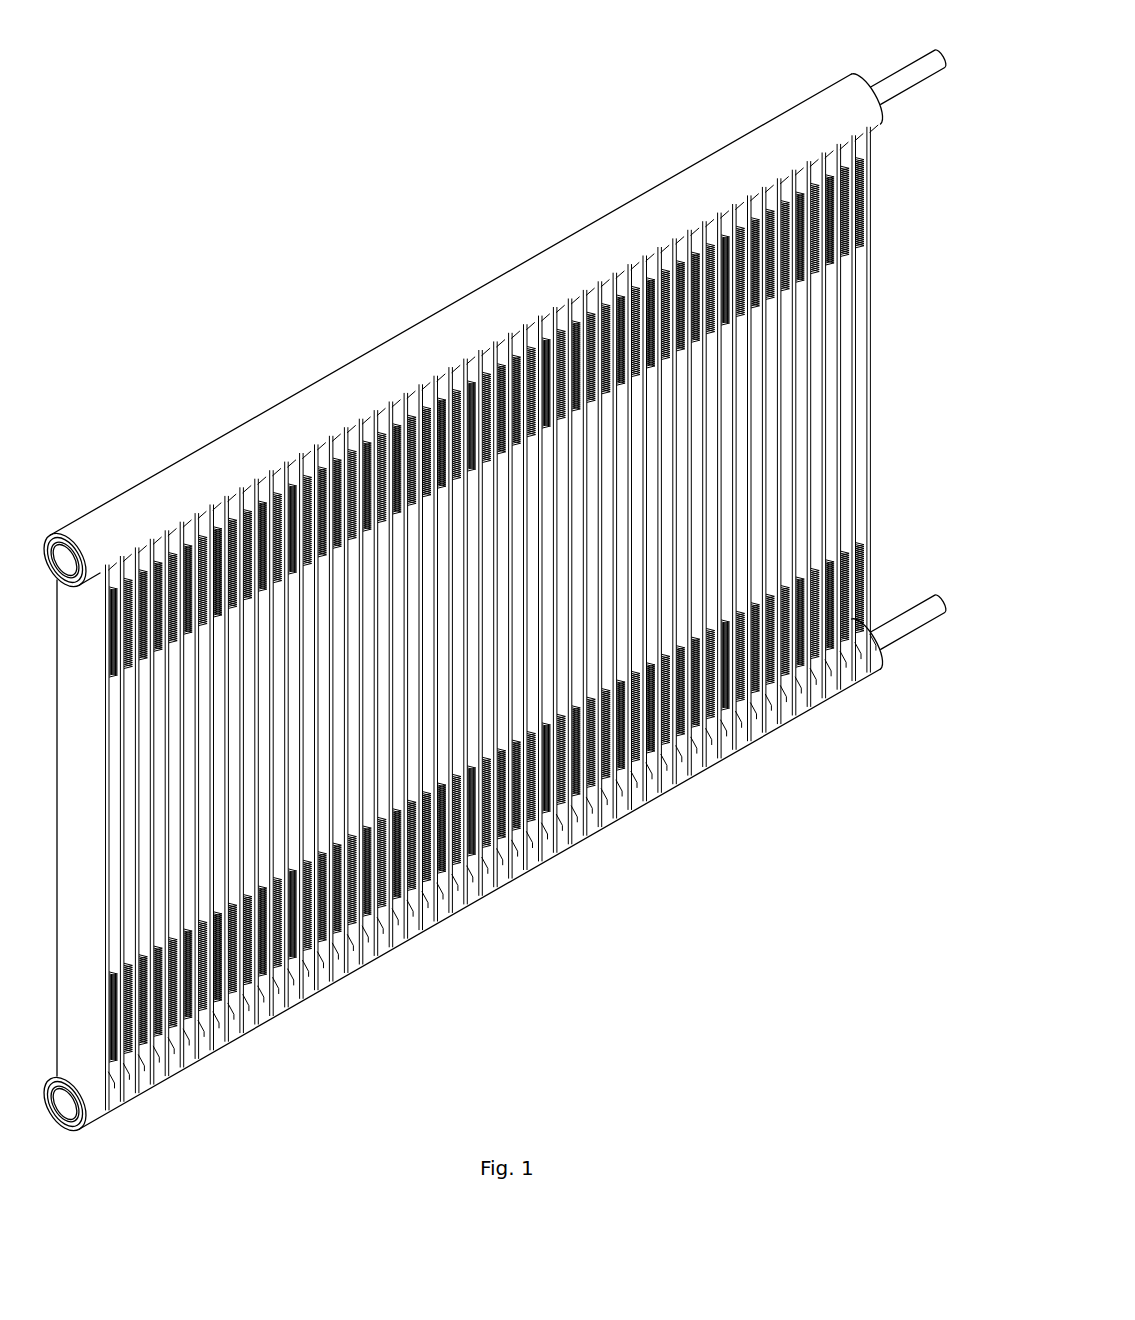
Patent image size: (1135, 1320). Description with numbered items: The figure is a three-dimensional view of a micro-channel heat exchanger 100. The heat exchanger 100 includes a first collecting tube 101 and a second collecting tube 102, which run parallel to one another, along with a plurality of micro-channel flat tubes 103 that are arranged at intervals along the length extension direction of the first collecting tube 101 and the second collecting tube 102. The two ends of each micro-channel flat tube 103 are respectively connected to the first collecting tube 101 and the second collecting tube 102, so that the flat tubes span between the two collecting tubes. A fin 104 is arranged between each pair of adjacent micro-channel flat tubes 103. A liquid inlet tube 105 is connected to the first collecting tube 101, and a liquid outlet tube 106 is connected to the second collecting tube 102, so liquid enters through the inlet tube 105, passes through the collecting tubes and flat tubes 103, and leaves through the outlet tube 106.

The micro-channel heat exchanger 100 is at (497, 580).
The first collecting tube 101 is at (313, 405).
The second collecting tube 102 is at (338, 985).
The micro-channel flat tube 103 is at (856, 372).
The fin 104 is at (858, 204).
The liquid inlet tube 105 is at (898, 82).
The liquid outlet tube 106 is at (905, 636).